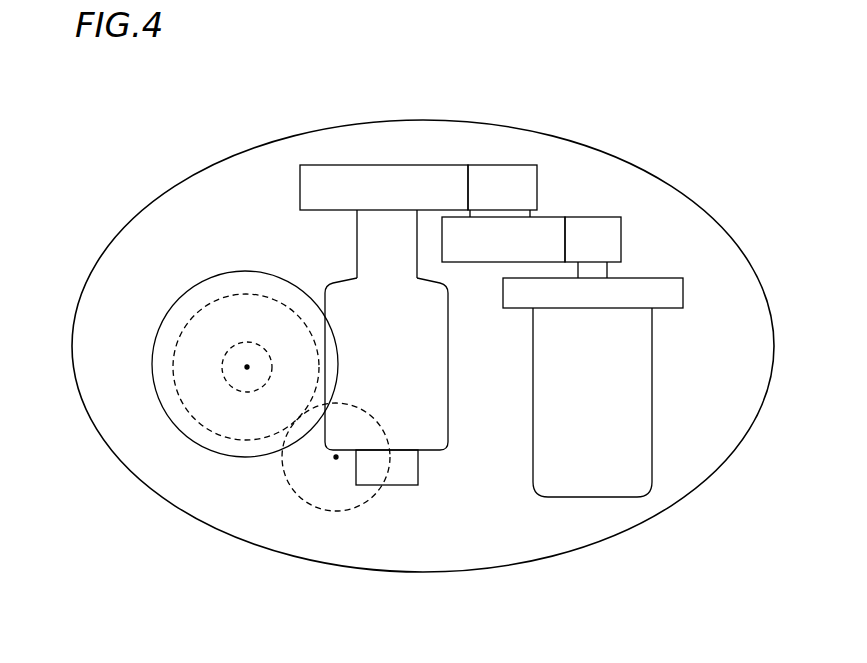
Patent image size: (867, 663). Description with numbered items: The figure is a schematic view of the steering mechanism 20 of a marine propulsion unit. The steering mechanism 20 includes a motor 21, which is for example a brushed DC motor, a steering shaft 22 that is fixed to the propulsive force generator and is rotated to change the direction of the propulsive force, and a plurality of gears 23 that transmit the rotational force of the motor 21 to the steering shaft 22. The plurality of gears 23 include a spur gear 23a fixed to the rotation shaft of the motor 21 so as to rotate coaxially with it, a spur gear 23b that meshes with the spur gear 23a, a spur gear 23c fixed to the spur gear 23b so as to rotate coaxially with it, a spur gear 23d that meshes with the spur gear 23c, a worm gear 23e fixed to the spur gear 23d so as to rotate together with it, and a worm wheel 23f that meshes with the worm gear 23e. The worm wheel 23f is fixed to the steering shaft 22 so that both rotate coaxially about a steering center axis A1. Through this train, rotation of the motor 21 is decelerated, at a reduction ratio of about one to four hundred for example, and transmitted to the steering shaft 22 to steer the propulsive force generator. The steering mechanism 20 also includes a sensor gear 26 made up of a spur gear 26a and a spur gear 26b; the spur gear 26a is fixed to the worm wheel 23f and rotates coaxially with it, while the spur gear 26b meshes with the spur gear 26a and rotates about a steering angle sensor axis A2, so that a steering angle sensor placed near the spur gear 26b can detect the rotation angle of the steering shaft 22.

The steering mechanism 20 is at (308, 103).
The motor 21 is at (670, 368).
The steering shaft 22 is at (217, 366).
The plurality of gears 23 is at (425, 307).
The spur gear 23a is at (612, 239).
The spur gear 23b is at (486, 247).
The spur gear 23c is at (528, 188).
The spur gear 23d is at (311, 188).
The worm gear 23e is at (430, 460).
The worm wheel 23f is at (230, 286).
The sensor gear 26 is at (291, 446).
The spur gear 26a is at (255, 441).
The spur gear 26b is at (372, 497).
The steering center axis A1 is at (247, 378).
The steering angle sensor axis A2 is at (336, 467).